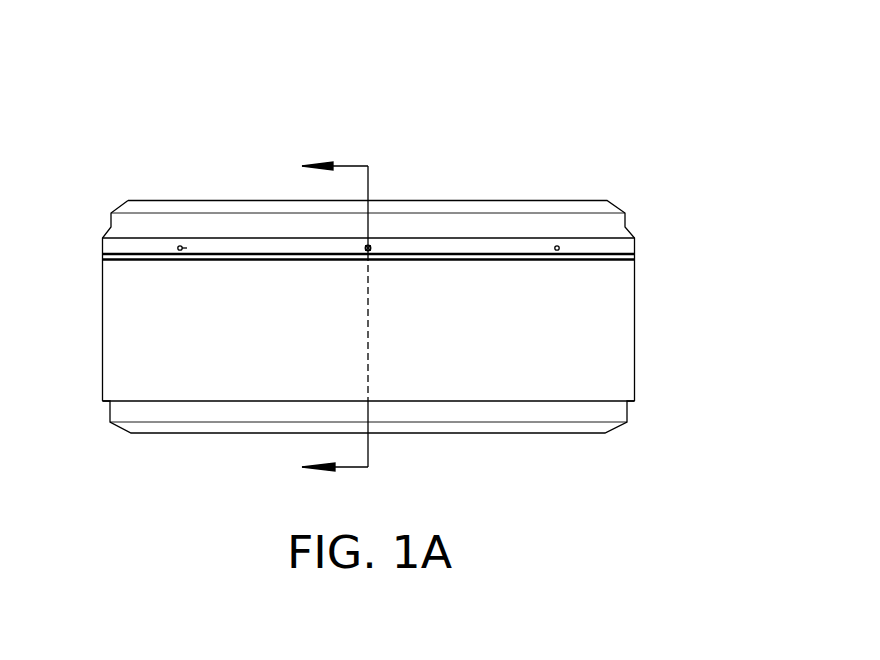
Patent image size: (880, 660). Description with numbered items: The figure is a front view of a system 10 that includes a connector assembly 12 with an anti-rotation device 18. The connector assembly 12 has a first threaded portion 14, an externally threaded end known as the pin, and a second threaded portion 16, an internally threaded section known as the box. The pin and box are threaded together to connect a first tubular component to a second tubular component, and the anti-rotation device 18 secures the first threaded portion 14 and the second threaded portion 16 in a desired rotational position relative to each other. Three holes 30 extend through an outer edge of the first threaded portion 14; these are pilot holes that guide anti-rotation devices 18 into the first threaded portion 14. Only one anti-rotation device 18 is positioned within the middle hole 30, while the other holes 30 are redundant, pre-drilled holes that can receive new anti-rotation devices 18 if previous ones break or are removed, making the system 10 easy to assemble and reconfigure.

The system 10 is at (130, 103).
The connector assembly 12 is at (652, 242).
The first threaded portion 14 is at (473, 225).
The second threaded portion 16 is at (615, 277).
The anti-rotation device 18 is at (368, 248).
The holes 30 is at (180, 248).